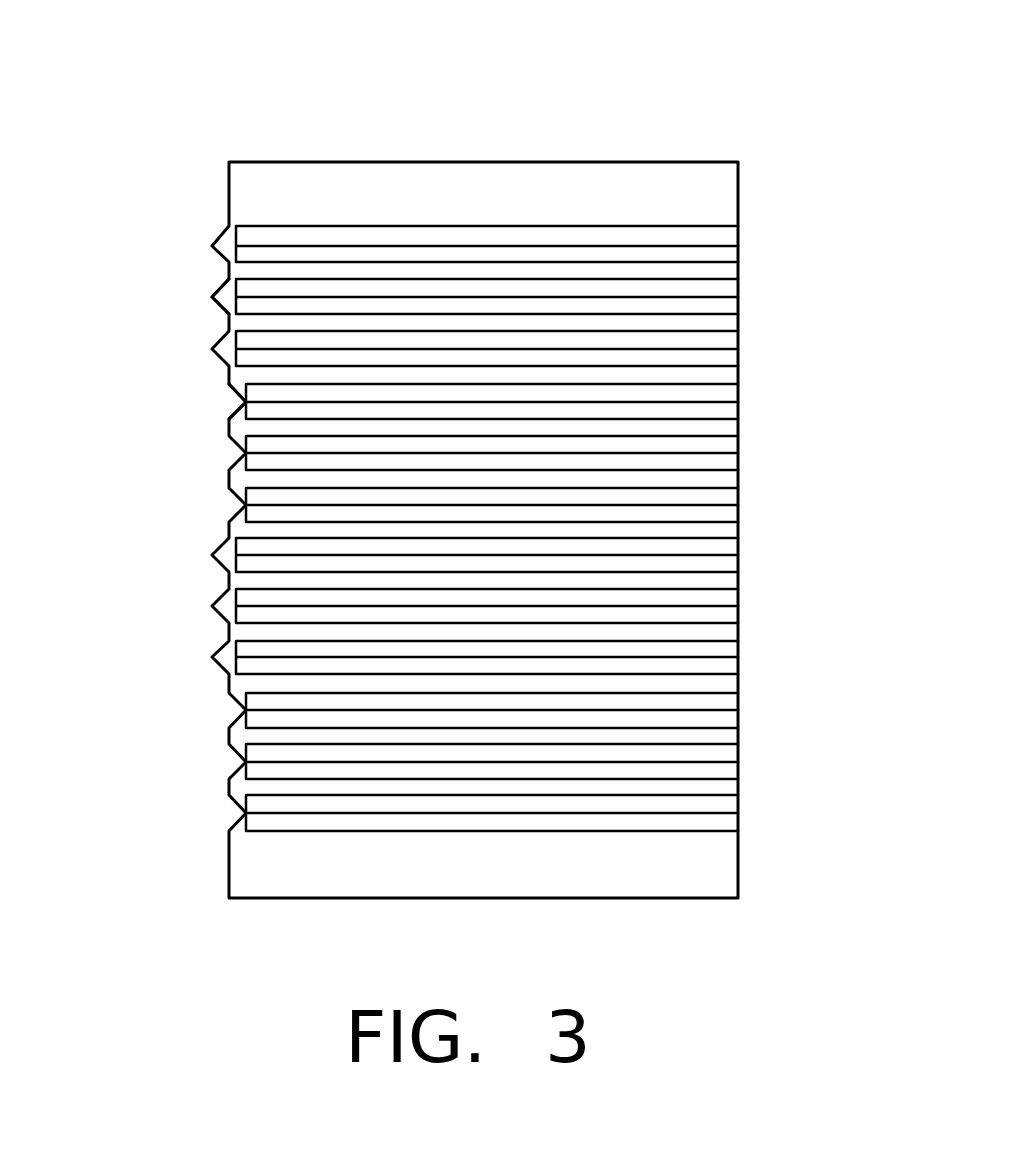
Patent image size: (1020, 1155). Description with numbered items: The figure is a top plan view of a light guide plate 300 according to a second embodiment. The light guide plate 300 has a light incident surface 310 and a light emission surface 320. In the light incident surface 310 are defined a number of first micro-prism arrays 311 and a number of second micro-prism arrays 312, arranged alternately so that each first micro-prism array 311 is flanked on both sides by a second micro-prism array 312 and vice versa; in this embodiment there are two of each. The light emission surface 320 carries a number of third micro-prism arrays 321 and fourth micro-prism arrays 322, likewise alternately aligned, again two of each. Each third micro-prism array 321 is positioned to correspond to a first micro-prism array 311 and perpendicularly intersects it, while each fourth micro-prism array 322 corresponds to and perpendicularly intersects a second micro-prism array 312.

The light guide plate 300 is at (470, 455).
The light incident surface 310 is at (228, 195).
The first micro-prism array 311 is at (215, 297).
The second micro-prism array 312 is at (243, 398).
The light emission surface 320 is at (695, 203).
The third micro-prism array 321 is at (758, 227).
The fourth micro-prism array 322 is at (760, 373).